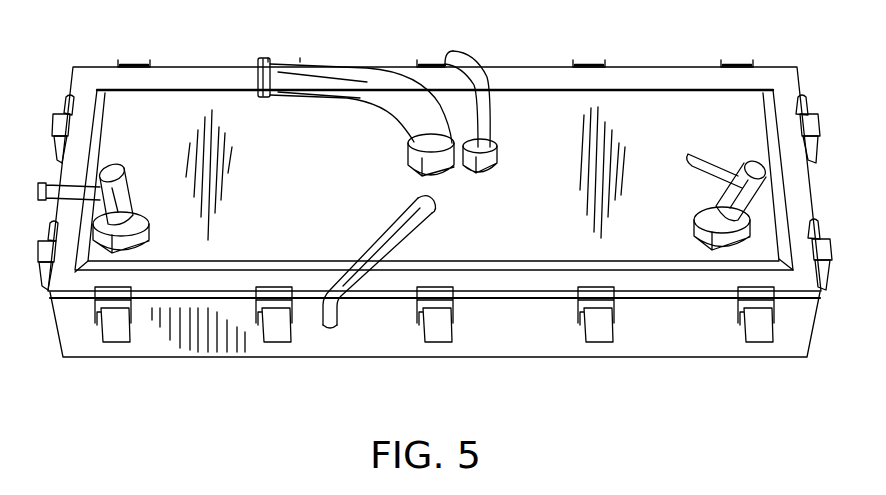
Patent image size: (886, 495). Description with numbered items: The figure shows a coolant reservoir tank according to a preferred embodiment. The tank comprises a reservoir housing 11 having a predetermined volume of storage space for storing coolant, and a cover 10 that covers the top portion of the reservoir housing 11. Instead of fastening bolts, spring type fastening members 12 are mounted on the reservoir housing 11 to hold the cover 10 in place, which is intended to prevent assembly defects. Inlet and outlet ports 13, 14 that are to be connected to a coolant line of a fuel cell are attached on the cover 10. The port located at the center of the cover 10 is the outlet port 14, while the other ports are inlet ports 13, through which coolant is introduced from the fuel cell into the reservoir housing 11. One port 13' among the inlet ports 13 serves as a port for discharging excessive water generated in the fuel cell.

The cover 10 is at (180, 100).
The reservoir housing 11 is at (162, 345).
The spring type fastening member 12 is at (110, 337).
The inlet port 13 is at (475, 98).
The inlet port for discharging excessive water 13' is at (379, 294).
The outlet port 14 is at (327, 78).